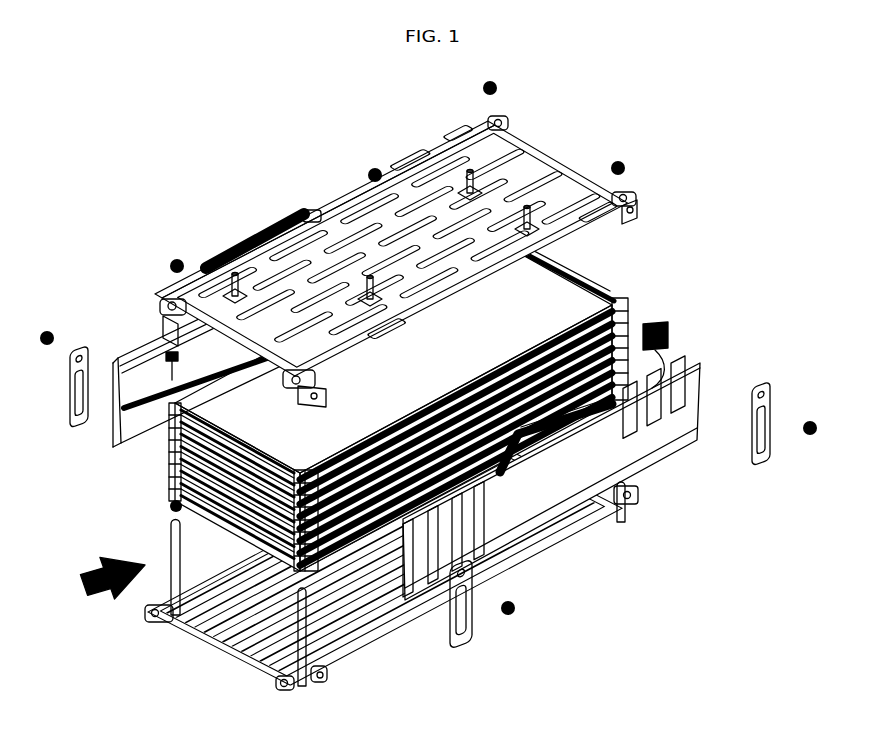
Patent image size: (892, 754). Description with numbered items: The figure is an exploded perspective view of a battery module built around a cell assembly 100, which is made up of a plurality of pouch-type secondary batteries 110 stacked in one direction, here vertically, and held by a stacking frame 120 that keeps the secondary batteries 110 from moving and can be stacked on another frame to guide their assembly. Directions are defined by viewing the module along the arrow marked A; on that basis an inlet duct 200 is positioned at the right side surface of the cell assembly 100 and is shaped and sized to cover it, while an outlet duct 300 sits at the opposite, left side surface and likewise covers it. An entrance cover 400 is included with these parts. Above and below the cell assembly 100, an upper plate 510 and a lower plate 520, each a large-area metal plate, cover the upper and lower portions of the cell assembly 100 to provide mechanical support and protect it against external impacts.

The cell assembly 100 is at (716, 233).
The secondary battery 110 is at (556, 298).
The stacking frame 120 is at (598, 294).
The inlet duct 200 is at (652, 456).
The outlet duct 300 is at (210, 220).
The entrance cover 400 is at (272, 222).
The upper plate 510 is at (540, 153).
The lower plate 520 is at (226, 628).